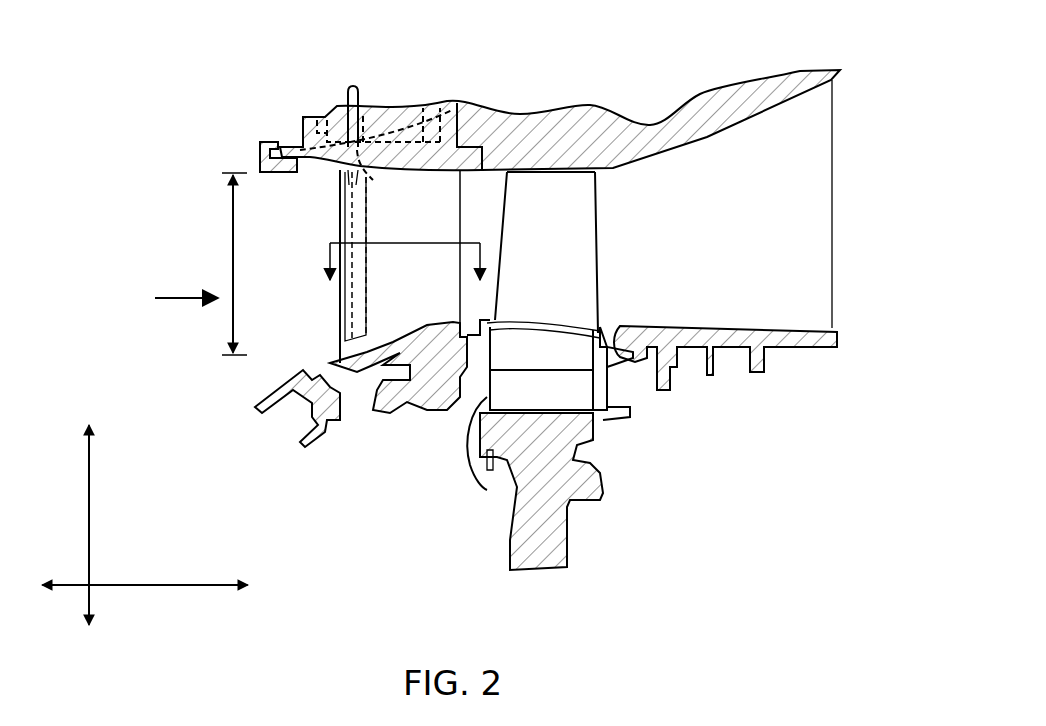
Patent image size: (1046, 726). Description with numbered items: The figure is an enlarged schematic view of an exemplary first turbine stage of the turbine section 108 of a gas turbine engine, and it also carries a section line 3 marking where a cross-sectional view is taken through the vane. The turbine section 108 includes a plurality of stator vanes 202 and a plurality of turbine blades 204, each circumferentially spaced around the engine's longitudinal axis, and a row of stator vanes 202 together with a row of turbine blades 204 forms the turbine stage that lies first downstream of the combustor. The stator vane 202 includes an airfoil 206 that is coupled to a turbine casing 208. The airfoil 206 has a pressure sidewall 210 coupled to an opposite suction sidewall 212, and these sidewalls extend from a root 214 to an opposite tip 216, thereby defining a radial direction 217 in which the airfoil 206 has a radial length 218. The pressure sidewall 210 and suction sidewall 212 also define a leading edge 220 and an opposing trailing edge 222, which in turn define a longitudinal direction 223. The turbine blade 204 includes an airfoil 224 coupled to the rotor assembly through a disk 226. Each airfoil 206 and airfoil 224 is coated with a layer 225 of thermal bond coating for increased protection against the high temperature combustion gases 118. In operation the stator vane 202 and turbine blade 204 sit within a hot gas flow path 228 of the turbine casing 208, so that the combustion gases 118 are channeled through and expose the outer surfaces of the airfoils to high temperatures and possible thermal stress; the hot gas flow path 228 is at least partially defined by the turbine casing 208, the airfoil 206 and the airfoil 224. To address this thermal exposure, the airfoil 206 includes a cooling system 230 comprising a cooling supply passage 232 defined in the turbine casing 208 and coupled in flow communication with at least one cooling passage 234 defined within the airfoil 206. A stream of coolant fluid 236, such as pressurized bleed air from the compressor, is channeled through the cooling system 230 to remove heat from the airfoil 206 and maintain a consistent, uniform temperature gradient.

The turbine section 108 is at (772, 48).
The high temperature combustion gases 118 is at (170, 305).
The stator vane 202 is at (340, 316).
The turbine blade 204 is at (598, 283).
The airfoil 206 is at (447, 221).
The turbine casing 208 is at (388, 107).
The pressure sidewall 210 is at (336, 258).
The suction sidewall 212 is at (383, 222).
The root 214 is at (340, 352).
The tip 216 is at (342, 162).
The radial direction 217 is at (91, 480).
The radial length 218 is at (231, 238).
The leading edge 220 is at (397, 238).
The trailing edge 222 is at (512, 150).
The longitudinal direction 223 is at (188, 583).
The airfoil 224 is at (579, 221).
The thermal bond coating layer 225 is at (460, 195).
The disk 226 is at (572, 522).
The hot gas flow path 228 is at (633, 186).
The cooling system 230 is at (280, 148).
The cooling supply passage 232 is at (347, 92).
The cooling passage 234 is at (440, 108).
The coolant fluid 236 is at (353, 84).
The section line 3- 3 is at (404, 276).